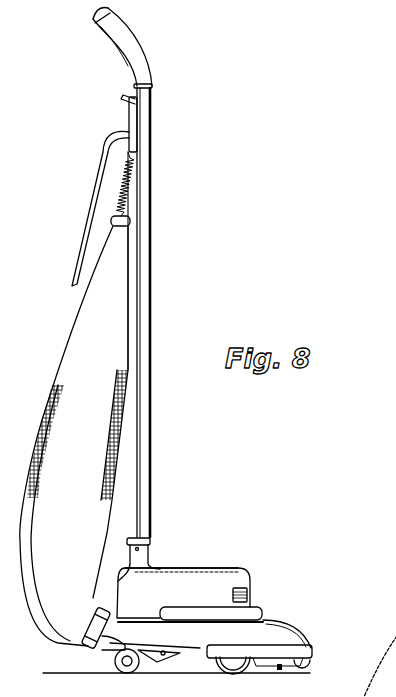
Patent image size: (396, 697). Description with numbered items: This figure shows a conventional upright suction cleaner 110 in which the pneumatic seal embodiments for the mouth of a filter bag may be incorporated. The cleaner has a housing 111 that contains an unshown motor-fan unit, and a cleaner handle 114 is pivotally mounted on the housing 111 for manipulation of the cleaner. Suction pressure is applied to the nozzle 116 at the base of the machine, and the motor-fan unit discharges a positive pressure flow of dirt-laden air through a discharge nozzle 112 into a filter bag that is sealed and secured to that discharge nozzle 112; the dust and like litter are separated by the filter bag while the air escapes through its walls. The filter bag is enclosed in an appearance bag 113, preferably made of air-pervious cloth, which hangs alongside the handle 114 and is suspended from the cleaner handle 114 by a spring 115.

The upright suction cleaner 110 is at (189, 602).
The housing 111 is at (213, 568).
The discharge nozzle 112 is at (100, 651).
The appearance bag 113 is at (86, 453).
The cleaner handle 114 is at (138, 334).
The spring 115 is at (122, 186).
The nozzle 116 is at (268, 658).